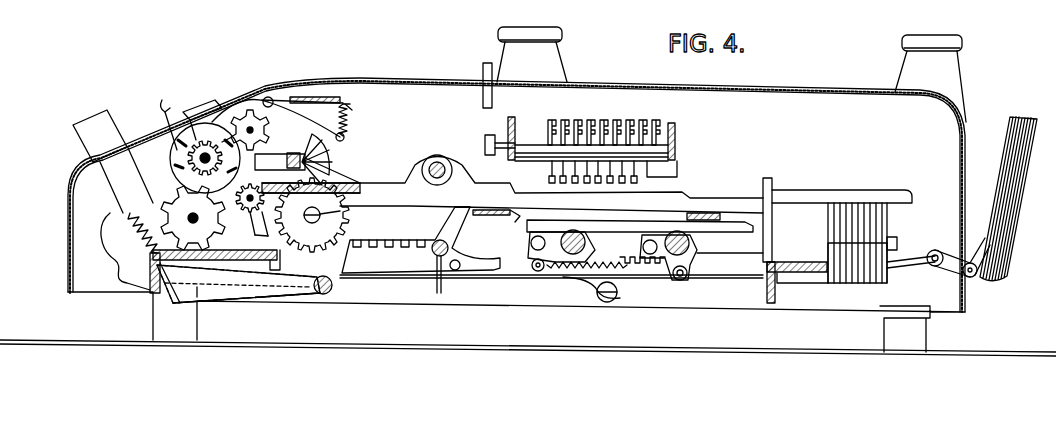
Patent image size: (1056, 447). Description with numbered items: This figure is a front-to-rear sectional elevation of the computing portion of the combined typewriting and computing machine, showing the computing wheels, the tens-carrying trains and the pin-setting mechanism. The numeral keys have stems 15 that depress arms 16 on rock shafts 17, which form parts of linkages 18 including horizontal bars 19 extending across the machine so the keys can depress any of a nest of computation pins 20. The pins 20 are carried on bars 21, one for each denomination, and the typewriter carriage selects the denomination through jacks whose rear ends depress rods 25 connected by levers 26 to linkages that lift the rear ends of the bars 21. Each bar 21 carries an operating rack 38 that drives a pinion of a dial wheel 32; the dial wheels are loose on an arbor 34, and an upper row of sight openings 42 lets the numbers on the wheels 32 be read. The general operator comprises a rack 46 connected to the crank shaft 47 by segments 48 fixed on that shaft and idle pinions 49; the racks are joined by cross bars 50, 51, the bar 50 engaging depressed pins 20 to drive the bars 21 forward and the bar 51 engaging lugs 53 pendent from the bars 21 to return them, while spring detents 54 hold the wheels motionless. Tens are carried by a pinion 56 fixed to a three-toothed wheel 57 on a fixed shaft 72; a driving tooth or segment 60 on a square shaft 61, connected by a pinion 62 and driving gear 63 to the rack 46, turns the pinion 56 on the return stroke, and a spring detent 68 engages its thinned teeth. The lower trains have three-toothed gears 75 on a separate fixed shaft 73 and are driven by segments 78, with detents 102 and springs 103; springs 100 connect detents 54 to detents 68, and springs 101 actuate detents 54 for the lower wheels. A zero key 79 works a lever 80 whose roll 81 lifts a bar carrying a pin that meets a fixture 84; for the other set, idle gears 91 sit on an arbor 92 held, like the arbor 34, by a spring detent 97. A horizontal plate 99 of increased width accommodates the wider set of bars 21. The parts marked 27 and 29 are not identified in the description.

The key stem 15 is at (481, 100).
The arm 16 is at (497, 135).
The rock shaft 17 is at (530, 147).
The linkage 18 is at (617, 120).
The horizontal bar 19 is at (678, 173).
The computation pin 20 is at (548, 180).
The bar 21 is at (837, 190).
The rod 25 is at (1007, 196).
The lever 26 is at (950, 256).
The comb 27 is at (840, 222).
The screw 29 is at (888, 277).
The computing wheel 32 is at (172, 175).
The arbor 34 is at (195, 160).
The operating rack 38 is at (350, 164).
The upper row of sight openings 42 is at (177, 103).
The rack 46 is at (392, 272).
The shaft 47 is at (418, 155).
The segment 48 is at (443, 154).
The idle pinion 49 is at (167, 120).
The cross bar 50 is at (722, 212).
The cross bar 51 is at (487, 216).
The lug 53 is at (513, 220).
The spring detent 54 is at (221, 138).
The pinion 56 is at (253, 124).
The three-toothed wheel 57 is at (244, 125).
The driving tooth 60 is at (250, 186).
The square shaft 61 is at (332, 160).
The pinion 62 is at (303, 98).
The driving gear 63 is at (343, 207).
The spring detent 68 is at (323, 100).
The fixed shaft 72 is at (205, 106).
The fixed shaft 73 is at (238, 283).
The three-toothed gear 75 is at (314, 286).
The segment 78 is at (312, 215).
The zero key 79 is at (90, 124).
The lever 80 is at (268, 303).
The roll 81 is at (446, 267).
The fixture 84 is at (677, 160).
The idle gear 91 is at (144, 223).
The arbor 92 is at (193, 218).
The spring detent 97 is at (250, 229).
The horizontal plate 99 is at (607, 220).
The spring 100 is at (350, 107).
The spring 101 is at (206, 220).
The detent 102 is at (269, 240).
The spring 103 is at (216, 266).